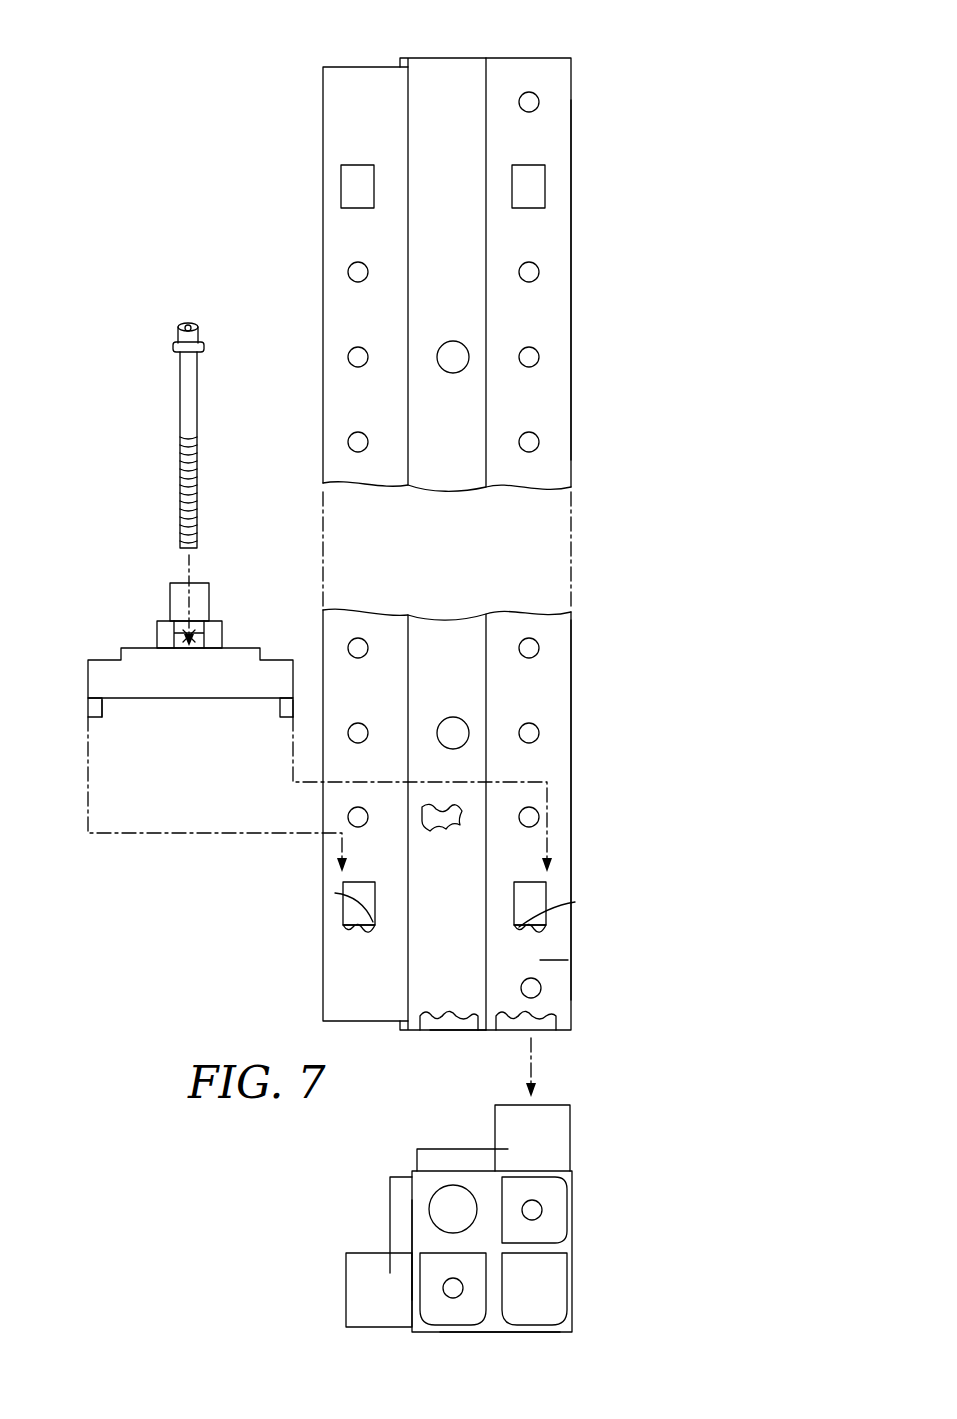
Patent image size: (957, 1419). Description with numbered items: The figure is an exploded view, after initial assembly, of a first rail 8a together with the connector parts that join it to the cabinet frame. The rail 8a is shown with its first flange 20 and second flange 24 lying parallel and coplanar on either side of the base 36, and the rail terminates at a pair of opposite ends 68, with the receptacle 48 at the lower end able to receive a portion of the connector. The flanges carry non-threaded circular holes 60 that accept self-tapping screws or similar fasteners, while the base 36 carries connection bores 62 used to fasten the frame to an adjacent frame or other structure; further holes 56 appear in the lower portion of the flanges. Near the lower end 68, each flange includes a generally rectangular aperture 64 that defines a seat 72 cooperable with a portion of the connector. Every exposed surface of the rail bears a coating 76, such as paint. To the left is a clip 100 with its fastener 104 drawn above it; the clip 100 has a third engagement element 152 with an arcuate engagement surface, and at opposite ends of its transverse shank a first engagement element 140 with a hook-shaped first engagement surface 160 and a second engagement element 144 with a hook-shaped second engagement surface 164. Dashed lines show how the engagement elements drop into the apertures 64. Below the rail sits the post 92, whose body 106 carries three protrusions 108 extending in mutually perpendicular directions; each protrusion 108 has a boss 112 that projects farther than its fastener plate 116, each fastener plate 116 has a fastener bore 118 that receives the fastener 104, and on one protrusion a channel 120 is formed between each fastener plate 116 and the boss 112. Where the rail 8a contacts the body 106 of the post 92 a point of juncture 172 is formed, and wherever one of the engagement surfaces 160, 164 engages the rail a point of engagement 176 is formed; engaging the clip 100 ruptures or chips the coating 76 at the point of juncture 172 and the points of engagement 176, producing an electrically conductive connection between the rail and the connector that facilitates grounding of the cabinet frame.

The first rail 8a is at (578, 256).
The first flange 20 is at (348, 66).
The second flange 24 is at (563, 59).
The base 36 is at (440, 58).
The receptacle 48 is at (481, 1031).
The mounting holes 56 is at (381, 703).
The circular holes 60 is at (358, 274).
The connection bores 62 is at (445, 350).
The rectangular apertures 64 is at (374, 900).
The ends 68 is at (523, 58).
The seat 72 is at (335, 893).
The coating 76 is at (557, 955).
The point of juncture 172 is at (448, 1018).
The point of engagement 176 is at (450, 826).
The fastener 104 is at (182, 380).
The clip 100 is at (80, 660).
The third engagement element 152 is at (170, 592).
The second engagement element 144 is at (88, 707).
The second engagement surface 164 is at (102, 712).
The first engagement surface 160 is at (280, 712).
The first engagement element 140 is at (293, 717).
The post 92 is at (585, 1328).
The body 106 is at (530, 1333).
The protrusion 108 is at (584, 1106).
The boss 112 is at (545, 1105).
The fastener plate 116 is at (465, 1148).
The fastener bore 118 is at (537, 1205).
The channel 120 is at (500, 1295).